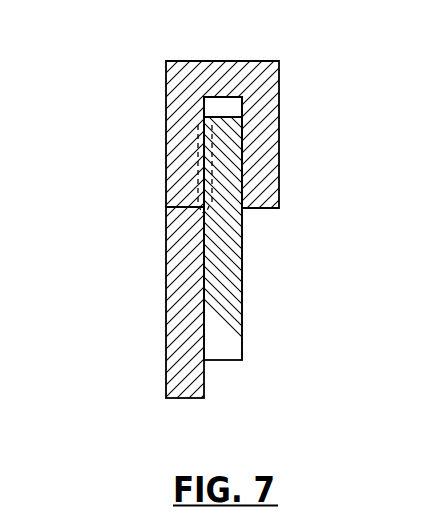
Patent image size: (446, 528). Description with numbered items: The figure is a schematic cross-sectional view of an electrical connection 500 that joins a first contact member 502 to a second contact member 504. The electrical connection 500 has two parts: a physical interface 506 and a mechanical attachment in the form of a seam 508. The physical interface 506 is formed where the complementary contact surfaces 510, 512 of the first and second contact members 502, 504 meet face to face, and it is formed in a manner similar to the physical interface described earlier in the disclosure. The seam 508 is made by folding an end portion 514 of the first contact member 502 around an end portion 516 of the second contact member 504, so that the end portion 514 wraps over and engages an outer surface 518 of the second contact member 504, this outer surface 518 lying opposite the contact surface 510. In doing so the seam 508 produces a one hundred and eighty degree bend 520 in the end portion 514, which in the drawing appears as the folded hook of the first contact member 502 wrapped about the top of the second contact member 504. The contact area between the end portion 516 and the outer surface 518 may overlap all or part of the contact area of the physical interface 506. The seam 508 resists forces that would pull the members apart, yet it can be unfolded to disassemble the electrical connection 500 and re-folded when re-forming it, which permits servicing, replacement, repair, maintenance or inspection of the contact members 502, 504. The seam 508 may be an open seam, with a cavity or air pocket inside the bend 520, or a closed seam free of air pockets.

The electrical connection 500 is at (223, 208).
The first contact member 502 is at (181, 370).
The second contact member 504 is at (223, 337).
The physical interface 506 is at (188, 172).
The seam 508 is at (296, 173).
The contact surface 510 is at (205, 197).
The contact surface 512 is at (174, 207).
The end portion 514 is at (268, 133).
The end portion 516 is at (230, 100).
The outer surface 518 is at (243, 266).
The bend 520 is at (214, 73).